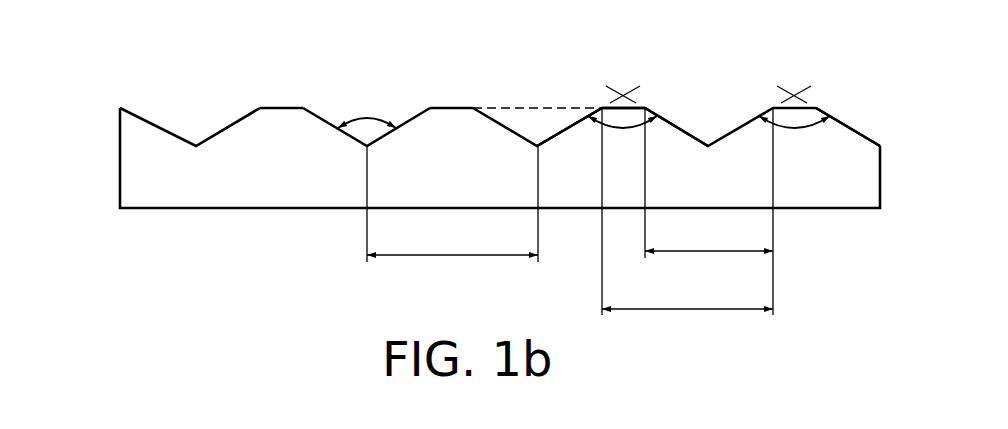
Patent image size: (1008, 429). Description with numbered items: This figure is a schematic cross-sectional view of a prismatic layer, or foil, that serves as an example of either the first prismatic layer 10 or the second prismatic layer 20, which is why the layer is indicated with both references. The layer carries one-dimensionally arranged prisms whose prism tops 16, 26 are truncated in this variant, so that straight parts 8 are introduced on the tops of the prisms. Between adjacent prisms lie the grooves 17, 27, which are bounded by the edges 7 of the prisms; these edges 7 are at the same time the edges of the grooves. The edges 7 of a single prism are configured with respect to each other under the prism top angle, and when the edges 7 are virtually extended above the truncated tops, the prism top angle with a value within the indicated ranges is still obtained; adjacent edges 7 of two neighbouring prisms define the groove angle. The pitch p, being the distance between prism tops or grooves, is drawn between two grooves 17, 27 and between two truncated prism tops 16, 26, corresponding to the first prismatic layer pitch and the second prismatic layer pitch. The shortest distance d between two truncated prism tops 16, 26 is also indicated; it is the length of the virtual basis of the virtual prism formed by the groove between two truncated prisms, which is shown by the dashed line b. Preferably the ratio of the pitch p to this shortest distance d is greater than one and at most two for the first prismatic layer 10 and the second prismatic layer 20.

The first prismatic layer 10 is at (456, 168).
The second prismatic layer 20 is at (114, 164).
The first grooves 17 is at (190, 102).
The second grooves 27 is at (196, 143).
The straight parts 8 is at (284, 107).
The first prism tops 16 is at (708, 86).
The second prism tops 26 is at (782, 102).
The edges 7 is at (677, 126).
The dashed line b is at (527, 107).
The pitch p is at (570, 211).
The shortest distance between truncated prism tops d is at (719, 183).